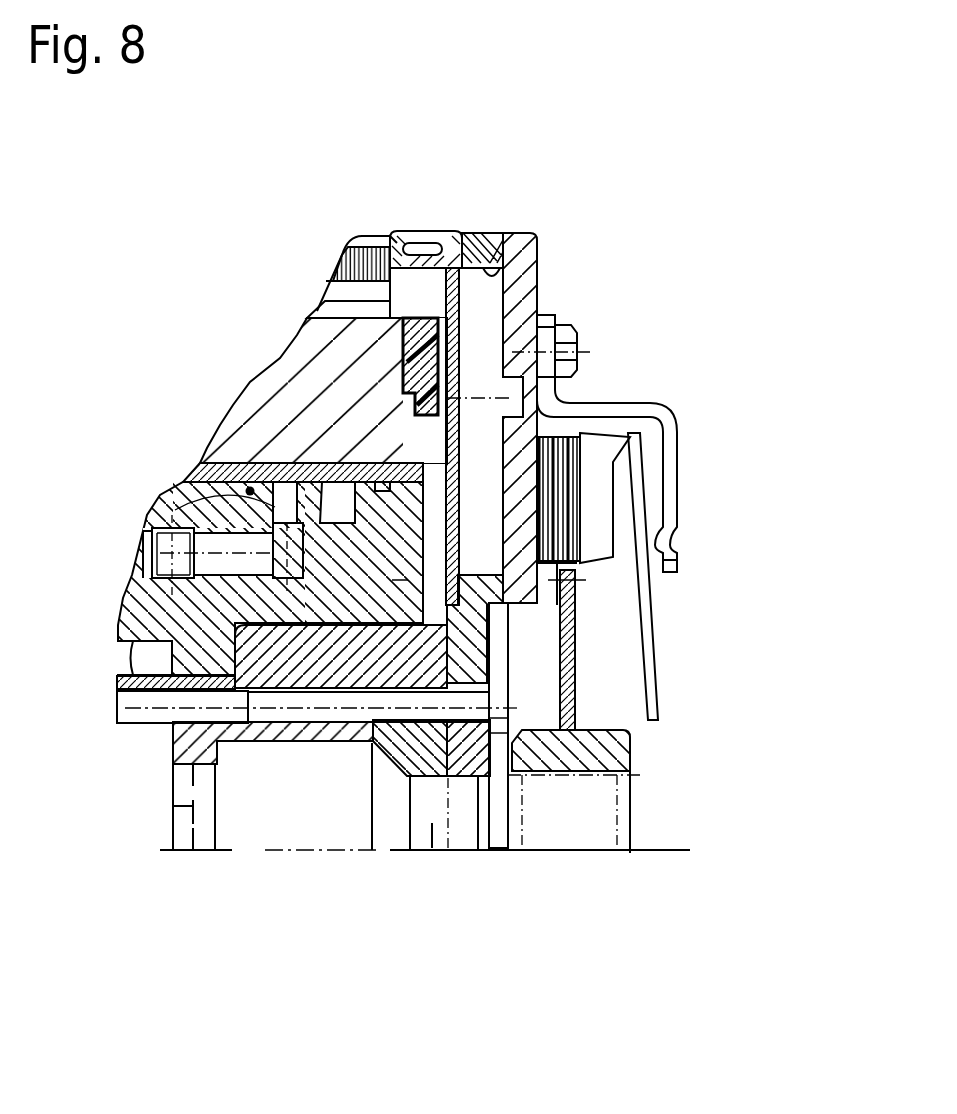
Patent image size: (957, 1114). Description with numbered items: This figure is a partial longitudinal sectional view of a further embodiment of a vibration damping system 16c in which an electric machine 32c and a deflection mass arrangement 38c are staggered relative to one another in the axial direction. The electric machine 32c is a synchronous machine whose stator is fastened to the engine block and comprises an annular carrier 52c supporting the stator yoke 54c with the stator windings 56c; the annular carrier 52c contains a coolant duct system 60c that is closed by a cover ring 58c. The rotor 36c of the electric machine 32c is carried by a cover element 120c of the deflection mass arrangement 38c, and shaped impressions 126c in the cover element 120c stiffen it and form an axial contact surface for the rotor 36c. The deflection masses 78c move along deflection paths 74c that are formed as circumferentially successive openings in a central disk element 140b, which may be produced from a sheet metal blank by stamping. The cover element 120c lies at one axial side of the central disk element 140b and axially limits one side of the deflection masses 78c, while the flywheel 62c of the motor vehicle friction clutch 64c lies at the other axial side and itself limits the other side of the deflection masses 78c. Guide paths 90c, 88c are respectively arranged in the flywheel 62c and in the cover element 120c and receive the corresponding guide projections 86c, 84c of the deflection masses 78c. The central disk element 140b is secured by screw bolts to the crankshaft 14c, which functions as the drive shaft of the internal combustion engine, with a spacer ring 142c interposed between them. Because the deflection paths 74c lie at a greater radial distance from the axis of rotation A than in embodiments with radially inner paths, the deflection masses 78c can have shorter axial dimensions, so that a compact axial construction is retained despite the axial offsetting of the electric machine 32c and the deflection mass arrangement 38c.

The crankshaft 14c is at (163, 808).
The vibration damping system 16c is at (600, 251).
The electric machine 32c is at (292, 243).
The rotor 36c is at (384, 235).
The deflection mass arrangement 38c is at (499, 212).
The annular carrier 52c is at (220, 592).
The stator yoke 54c is at (268, 378).
The stator windings 56c is at (430, 350).
The cover ring 58c is at (175, 505).
The duct system 60c is at (248, 490).
The flywheel 62c is at (560, 392).
The friction clutch 64c is at (690, 553).
The deflection paths 74c is at (533, 232).
The deflection masses 78c is at (483, 345).
The guide projection 84c is at (447, 388).
The guide projection 86c is at (562, 358).
The guide path 88c is at (540, 480).
The guide path 90c is at (634, 422).
The cover element 120c is at (560, 578).
The impressions 126c is at (430, 254).
The central disk element 140b is at (528, 624).
The spacer ring 142c is at (312, 741).
The axis of rotation A is at (637, 852).